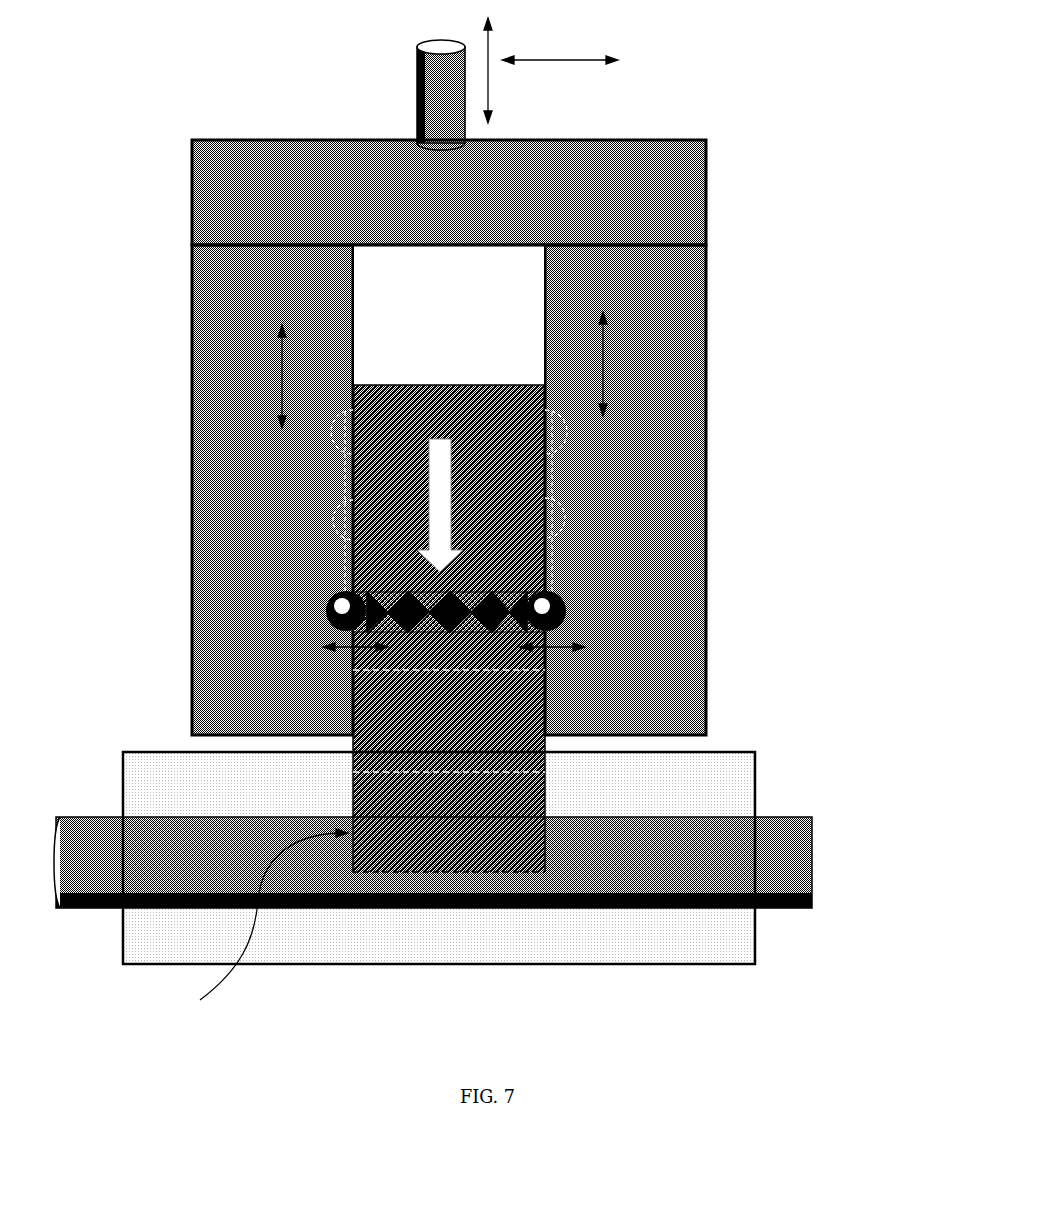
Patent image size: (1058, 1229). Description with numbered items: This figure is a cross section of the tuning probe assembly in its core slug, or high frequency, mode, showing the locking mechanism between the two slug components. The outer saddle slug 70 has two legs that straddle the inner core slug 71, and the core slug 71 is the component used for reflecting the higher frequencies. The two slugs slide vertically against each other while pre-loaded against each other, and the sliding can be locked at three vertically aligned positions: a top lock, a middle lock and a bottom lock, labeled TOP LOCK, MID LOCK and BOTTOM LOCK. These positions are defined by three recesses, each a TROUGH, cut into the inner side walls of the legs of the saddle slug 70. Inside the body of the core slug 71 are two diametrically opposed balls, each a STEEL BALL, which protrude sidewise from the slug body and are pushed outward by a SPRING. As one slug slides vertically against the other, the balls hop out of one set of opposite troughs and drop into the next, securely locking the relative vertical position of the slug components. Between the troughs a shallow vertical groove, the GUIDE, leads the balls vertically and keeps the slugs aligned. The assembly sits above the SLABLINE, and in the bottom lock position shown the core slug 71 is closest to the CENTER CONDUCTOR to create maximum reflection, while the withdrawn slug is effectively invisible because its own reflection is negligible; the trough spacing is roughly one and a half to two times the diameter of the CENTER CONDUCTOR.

The saddle slug 70 is at (706, 280).
The core slug 71 is at (543, 848).
The guide GUIDE is at (347, 472).
The spring SPRING is at (397, 590).
The trough TROUGH is at (332, 522).
The steel ball STEEL BALL is at (326, 612).
The top lock TOP LOCK is at (568, 435).
The middle lock MID LOCK is at (568, 517).
The bottom lock BOTTOM LOCK is at (570, 612).
The slabline SLABLINE is at (754, 753).
The center conductor CENTER CONDUCTOR is at (786, 817).